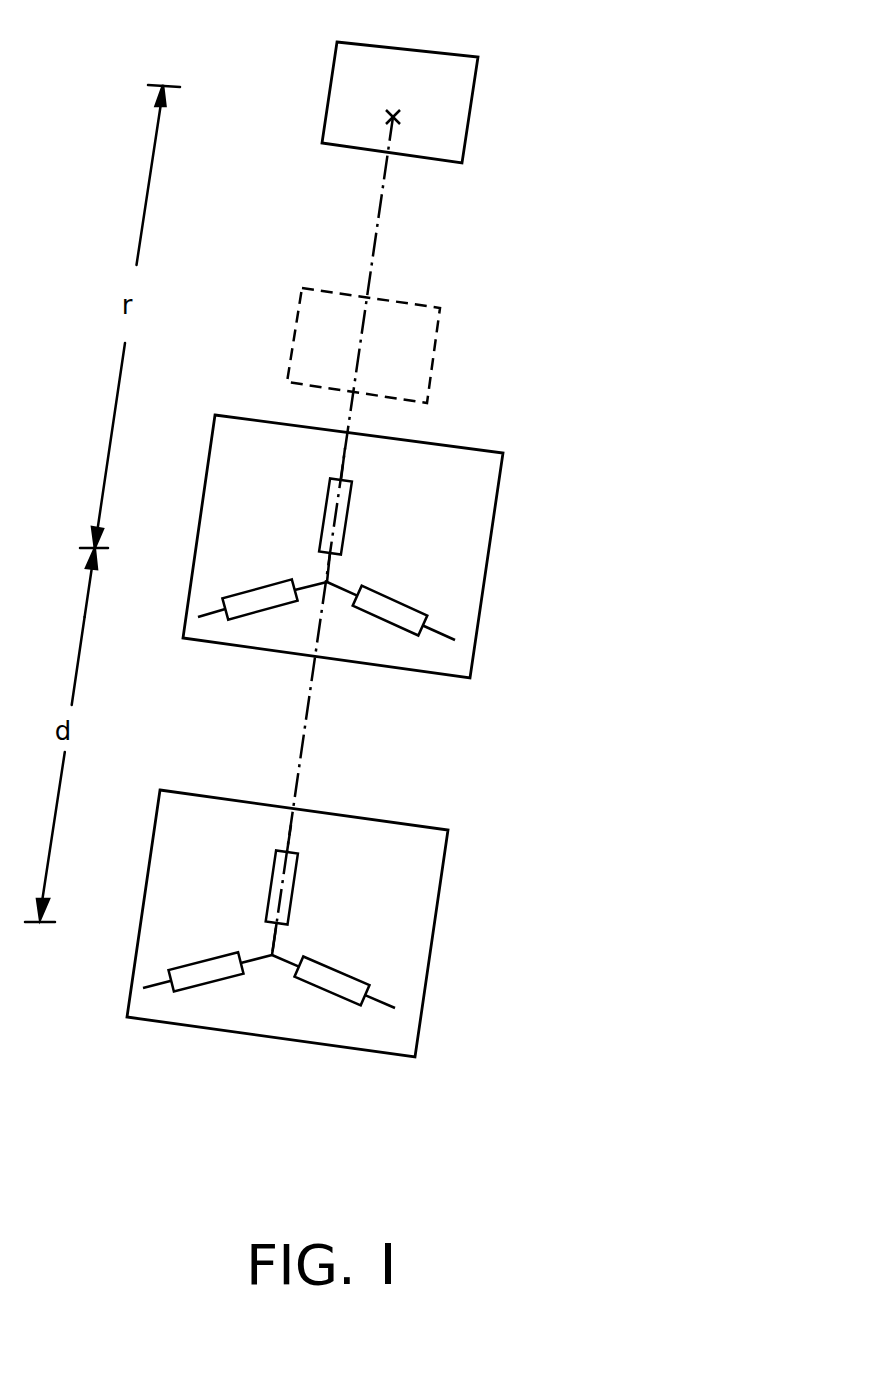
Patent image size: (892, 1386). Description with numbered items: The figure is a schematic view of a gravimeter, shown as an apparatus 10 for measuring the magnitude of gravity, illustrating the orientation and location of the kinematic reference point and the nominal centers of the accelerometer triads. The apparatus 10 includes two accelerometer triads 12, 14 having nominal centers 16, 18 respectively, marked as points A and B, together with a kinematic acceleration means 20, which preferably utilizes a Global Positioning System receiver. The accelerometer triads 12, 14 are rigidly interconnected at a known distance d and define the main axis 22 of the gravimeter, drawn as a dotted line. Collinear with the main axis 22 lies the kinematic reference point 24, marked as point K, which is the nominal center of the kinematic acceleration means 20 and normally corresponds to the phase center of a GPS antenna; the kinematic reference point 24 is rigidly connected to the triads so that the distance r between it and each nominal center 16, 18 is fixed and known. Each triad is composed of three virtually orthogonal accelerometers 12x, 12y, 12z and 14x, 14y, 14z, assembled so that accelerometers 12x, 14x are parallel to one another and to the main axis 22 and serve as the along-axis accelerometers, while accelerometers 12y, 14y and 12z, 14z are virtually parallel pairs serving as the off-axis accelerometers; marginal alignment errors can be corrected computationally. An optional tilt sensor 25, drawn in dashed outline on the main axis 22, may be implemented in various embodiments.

The apparatus 10 is at (696, 446).
The accelerometer triad 12 is at (487, 582).
The accelerometer 12x is at (350, 503).
The accelerometer 12y is at (388, 618).
The accelerometer 12z is at (257, 607).
The nominal center 16 is at (335, 577).
The accelerometer triad 14 is at (437, 938).
The accelerometer 14x is at (297, 870).
The accelerometer 14y is at (323, 992).
The accelerometer 14z is at (203, 983).
The nominal center 18 is at (283, 947).
The kinematic acceleration means 20 is at (420, 58).
The main axis 22 is at (370, 280).
The kinematic reference point 24 is at (396, 116).
The tilt sensor 25 is at (435, 353).